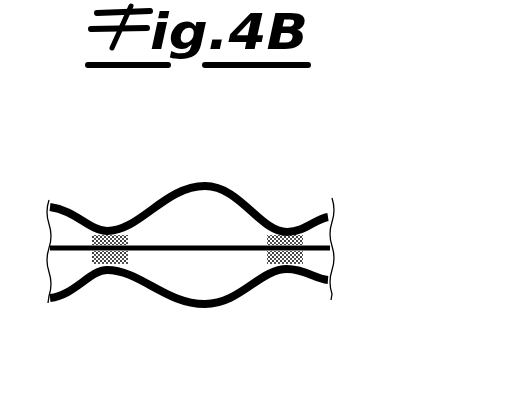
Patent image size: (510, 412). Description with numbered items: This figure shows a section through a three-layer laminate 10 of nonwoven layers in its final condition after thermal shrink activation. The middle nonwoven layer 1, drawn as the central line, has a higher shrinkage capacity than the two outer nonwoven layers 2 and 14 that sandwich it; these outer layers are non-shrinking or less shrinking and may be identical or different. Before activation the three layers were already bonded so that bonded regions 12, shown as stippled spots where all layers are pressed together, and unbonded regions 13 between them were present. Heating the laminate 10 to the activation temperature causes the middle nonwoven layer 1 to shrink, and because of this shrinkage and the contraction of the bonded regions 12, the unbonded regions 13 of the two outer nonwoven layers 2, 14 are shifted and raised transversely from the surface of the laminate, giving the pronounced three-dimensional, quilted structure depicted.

The middle nonwoven layer 1 is at (247, 220).
The outer nonwoven layer 2 is at (233, 307).
The laminate 10 is at (73, 307).
The bonded regions 12 is at (112, 284).
The unbonded regions 13 is at (70, 197).
The outer nonwoven layer 14 is at (232, 246).